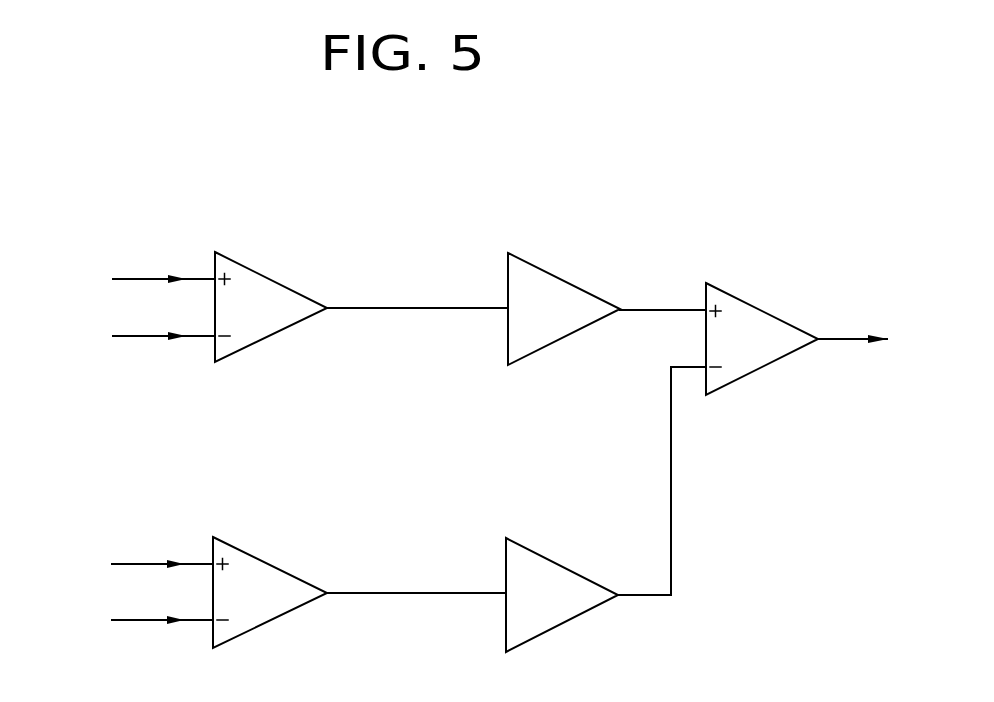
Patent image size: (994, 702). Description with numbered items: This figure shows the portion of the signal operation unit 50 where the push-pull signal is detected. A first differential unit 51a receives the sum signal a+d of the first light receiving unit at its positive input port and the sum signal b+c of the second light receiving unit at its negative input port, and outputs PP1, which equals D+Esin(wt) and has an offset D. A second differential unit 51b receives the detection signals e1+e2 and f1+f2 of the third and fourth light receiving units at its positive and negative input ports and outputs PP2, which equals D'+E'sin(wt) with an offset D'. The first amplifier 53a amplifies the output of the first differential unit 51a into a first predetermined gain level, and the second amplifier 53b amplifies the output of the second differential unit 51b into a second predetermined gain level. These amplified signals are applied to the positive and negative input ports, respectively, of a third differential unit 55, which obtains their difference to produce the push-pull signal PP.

The signal operation unit 50 is at (150, 188).
The first differential unit 51a is at (273, 277).
The second differential unit 51b is at (272, 562).
The first amplifier 53a is at (556, 268).
The second amplifier 53b is at (555, 560).
The third differential unit 55 is at (797, 327).